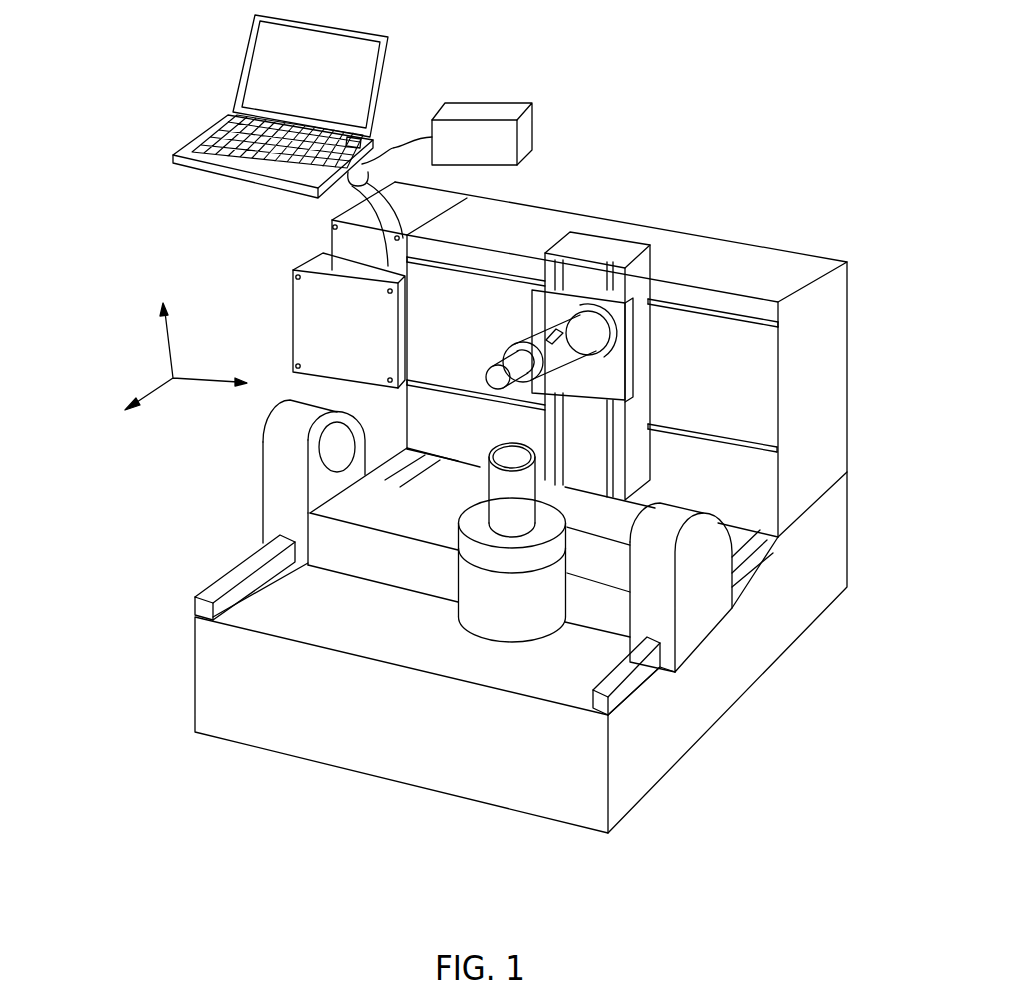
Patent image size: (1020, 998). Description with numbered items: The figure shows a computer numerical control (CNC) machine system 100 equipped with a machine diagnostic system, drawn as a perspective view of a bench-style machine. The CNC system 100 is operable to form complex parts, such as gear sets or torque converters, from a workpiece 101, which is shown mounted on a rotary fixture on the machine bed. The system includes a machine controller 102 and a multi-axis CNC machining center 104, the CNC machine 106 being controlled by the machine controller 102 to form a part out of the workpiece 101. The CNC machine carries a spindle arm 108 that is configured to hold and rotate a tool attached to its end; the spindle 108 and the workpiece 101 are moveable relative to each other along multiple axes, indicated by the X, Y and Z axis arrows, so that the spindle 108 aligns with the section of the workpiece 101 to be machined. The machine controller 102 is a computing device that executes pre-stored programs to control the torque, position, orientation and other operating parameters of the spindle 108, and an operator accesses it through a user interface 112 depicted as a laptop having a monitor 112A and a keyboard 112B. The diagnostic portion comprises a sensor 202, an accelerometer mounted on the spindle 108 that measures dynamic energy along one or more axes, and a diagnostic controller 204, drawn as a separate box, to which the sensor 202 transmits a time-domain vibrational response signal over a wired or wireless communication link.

The computer numerical control (CNC) machine system 100 is at (777, 110).
The workpiece 101 is at (502, 488).
The machine controller 102 is at (323, 267).
The multi-axis CNC machining center 104 is at (808, 245).
The CNC machine 106 is at (315, 320).
The spindle arm 108 is at (588, 338).
The user interface 112 is at (97, 13).
The monitor 112A is at (248, 53).
The keyboard 112B is at (207, 133).
The sensor 202 is at (557, 330).
The diagnostic controller 204 is at (482, 108).